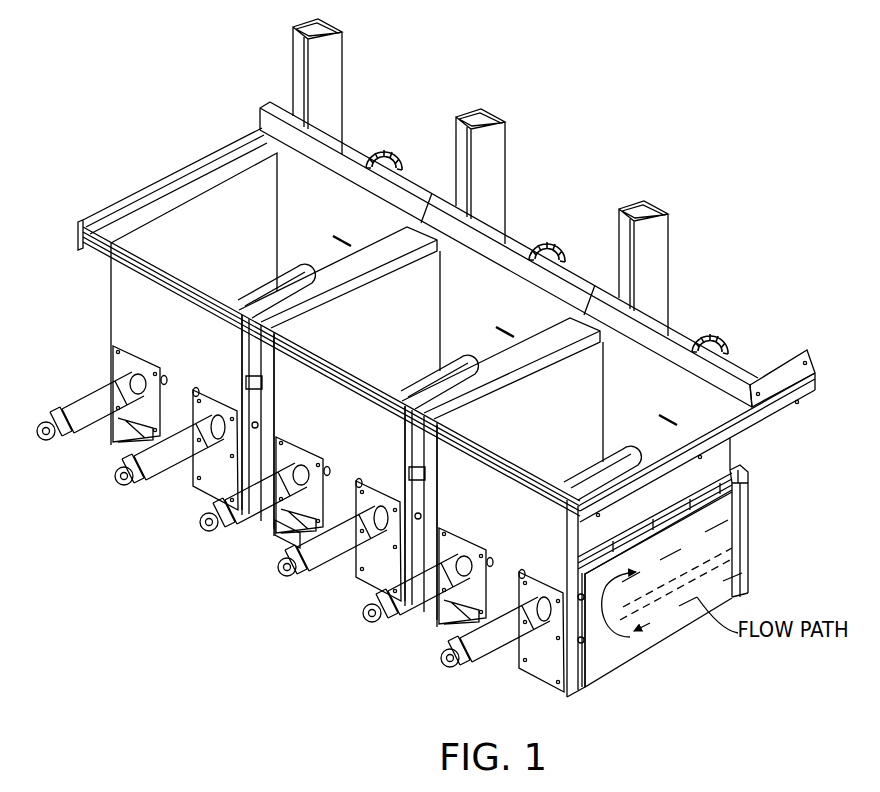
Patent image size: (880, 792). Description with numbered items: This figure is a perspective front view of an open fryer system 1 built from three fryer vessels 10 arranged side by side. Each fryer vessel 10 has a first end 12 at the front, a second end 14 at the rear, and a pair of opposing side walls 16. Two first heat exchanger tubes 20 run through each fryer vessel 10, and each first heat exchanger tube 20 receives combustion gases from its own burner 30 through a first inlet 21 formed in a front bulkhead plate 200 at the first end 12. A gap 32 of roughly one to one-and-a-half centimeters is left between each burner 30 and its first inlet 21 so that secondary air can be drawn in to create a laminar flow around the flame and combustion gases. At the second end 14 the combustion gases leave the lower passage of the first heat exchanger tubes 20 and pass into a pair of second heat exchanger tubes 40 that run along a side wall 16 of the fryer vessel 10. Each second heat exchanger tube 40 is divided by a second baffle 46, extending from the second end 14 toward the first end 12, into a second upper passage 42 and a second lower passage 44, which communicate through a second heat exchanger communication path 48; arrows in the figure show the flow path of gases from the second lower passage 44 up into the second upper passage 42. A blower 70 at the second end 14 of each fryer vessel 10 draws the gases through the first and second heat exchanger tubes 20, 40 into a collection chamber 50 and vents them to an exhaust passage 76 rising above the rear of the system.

The open fryer system 1 is at (655, 160).
The fryer vessel 10 is at (332, 188).
The first end 12 is at (168, 336).
The second end 14 is at (295, 226).
The side wall 16 is at (183, 248).
The first heat exchanger tube 20 is at (266, 294).
The first inlet 21 is at (213, 403).
The burner 30 is at (93, 390).
The gap 32 is at (197, 394).
The second heat exchanger tube 40 is at (687, 630).
The second upper passage 42 is at (728, 534).
The second lower passage 44 is at (727, 597).
The second baffle 46 is at (655, 610).
The second heat exchanger communication path 48 is at (592, 633).
The collection chamber 50 is at (751, 495).
The blower 70 is at (403, 165).
The exhaust passage 76 is at (343, 88).
The front bulkhead plate 200 is at (290, 535).